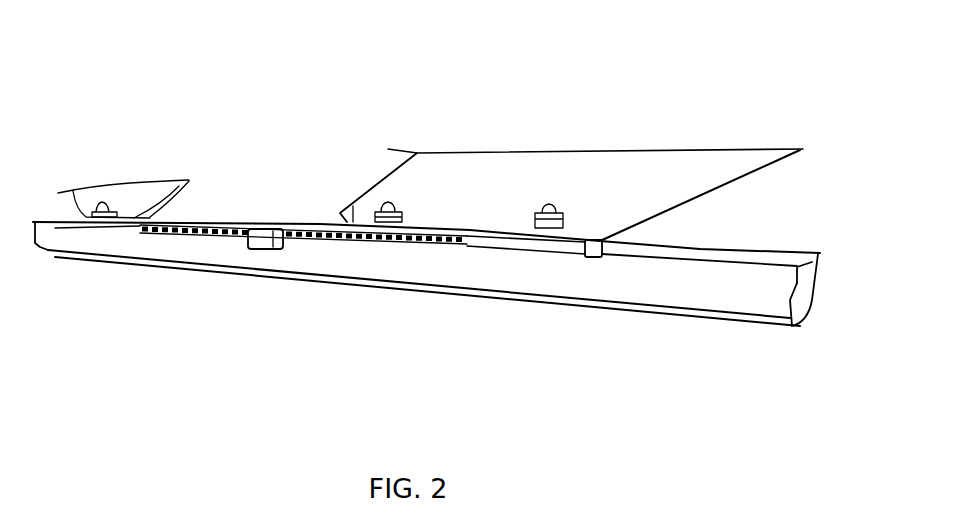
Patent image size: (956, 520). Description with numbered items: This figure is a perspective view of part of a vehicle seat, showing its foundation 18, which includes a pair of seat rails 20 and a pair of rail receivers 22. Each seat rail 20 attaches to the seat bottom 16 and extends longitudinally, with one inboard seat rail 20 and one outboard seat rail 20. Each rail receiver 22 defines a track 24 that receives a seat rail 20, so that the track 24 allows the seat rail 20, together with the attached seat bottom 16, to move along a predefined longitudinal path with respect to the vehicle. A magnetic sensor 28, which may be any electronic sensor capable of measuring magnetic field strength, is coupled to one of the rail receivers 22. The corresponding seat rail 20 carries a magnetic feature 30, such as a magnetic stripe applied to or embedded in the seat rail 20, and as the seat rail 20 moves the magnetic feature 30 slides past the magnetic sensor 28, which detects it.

The seat bottom 16 is at (395, 187).
The foundation 18 is at (783, 104).
The seat rail 20 is at (527, 246).
The rail receiver 22 is at (737, 293).
The track 24 is at (793, 241).
The magnetic sensor 28 is at (268, 250).
The magnetic feature 30 is at (330, 243).